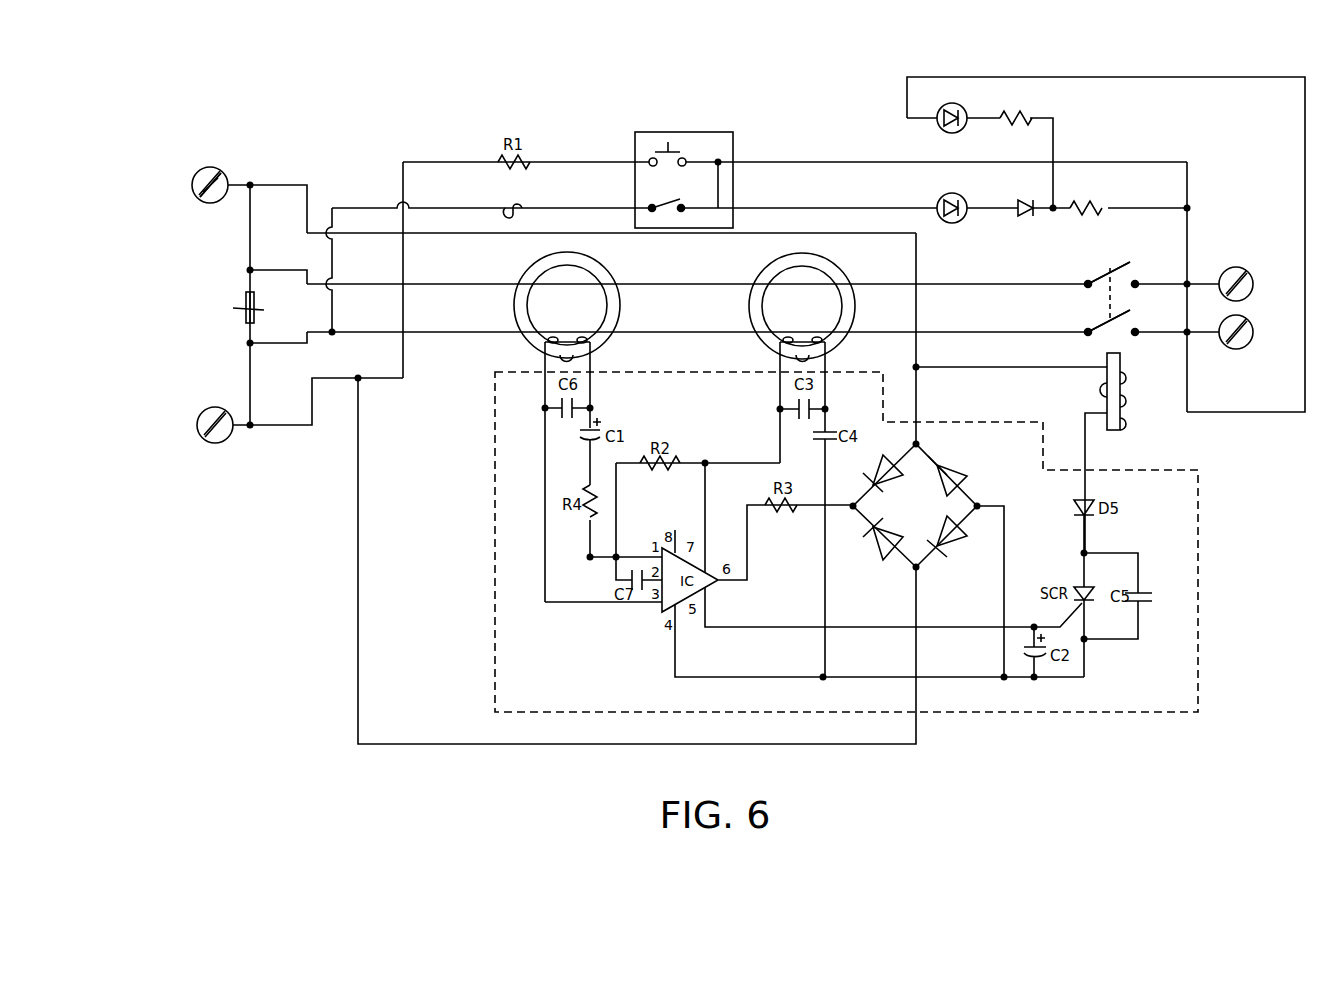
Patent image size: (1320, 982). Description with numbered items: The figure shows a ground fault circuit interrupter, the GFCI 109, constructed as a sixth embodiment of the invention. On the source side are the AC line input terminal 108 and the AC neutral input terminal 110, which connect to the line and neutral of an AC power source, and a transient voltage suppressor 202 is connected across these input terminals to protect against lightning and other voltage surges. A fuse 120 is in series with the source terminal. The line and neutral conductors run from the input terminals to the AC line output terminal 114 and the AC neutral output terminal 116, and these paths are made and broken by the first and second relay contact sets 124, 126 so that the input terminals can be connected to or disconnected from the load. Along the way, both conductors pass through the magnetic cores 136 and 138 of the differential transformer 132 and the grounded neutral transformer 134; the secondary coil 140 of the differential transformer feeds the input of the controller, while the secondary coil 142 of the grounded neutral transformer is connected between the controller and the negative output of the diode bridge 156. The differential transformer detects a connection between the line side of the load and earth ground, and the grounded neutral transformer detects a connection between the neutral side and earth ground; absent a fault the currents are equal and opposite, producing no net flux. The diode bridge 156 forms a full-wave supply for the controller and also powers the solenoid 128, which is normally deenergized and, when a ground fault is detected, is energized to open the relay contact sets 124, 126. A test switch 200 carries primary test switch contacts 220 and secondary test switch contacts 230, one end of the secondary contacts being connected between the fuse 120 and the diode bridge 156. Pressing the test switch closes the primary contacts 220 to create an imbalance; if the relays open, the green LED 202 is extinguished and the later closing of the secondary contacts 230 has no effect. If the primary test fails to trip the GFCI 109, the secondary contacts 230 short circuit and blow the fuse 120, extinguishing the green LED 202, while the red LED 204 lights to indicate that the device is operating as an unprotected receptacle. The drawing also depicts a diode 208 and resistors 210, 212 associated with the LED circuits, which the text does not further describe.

The AC line input terminal 108 is at (192, 184).
The AC neutral input terminal 110 is at (197, 424).
The green LED 202 is at (246, 297).
The fuse 120 is at (528, 210).
The test switch 200 is at (707, 132).
The primary test switch contacts 220 is at (686, 158).
The secondary test switch contacts 230 is at (681, 203).
The red LED 204 is at (958, 104).
The resistor 212 is at (1008, 112).
The diode 208 is at (1023, 201).
The resistor 210 is at (1086, 203).
The first relay contact set 124 is at (1130, 266).
The second relay contact set 126 is at (1130, 314).
The AC line output terminal 114 is at (1254, 282).
The AC neutral output terminal 116 is at (1254, 330).
The solenoid 128 is at (1122, 414).
The differential transformer 132 is at (619, 300).
The grounded neutral transformer 134 is at (855, 300).
The magnetic core of differential transformer 136 is at (529, 303).
The magnetic core of grounded neutral transformer 138 is at (764, 303).
The secondary coil of differential transformer 140 is at (553, 338).
The secondary coil of grounded neutral transformer 142 is at (788, 338).
The diode bridge 156 is at (920, 448).
The GFCI 109 is at (302, 800).